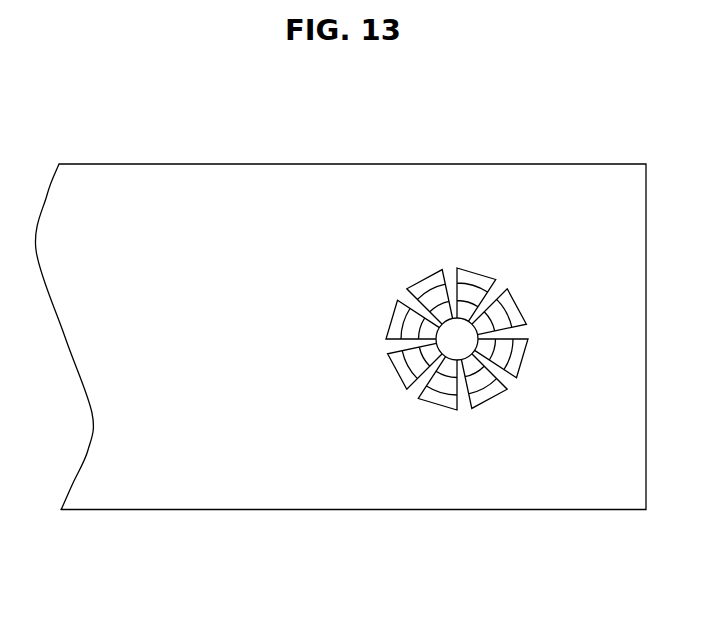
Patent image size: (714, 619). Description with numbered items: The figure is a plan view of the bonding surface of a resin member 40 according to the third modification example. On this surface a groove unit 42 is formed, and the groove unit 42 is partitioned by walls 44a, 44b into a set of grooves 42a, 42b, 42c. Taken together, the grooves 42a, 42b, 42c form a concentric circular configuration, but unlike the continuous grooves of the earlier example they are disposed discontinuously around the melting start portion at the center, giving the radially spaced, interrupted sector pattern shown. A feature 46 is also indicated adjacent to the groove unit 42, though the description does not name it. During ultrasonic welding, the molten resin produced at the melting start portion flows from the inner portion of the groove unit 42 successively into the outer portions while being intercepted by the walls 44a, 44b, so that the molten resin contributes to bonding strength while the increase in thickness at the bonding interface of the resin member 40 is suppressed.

The resin member 40 is at (207, 173).
The groove unit 42 is at (407, 271).
The groove 42a is at (390, 362).
The groove 42b is at (410, 302).
The groove 42c is at (390, 304).
The wall 44a is at (387, 335).
The wall 44b is at (387, 313).
The radial slit 46 is at (500, 295).